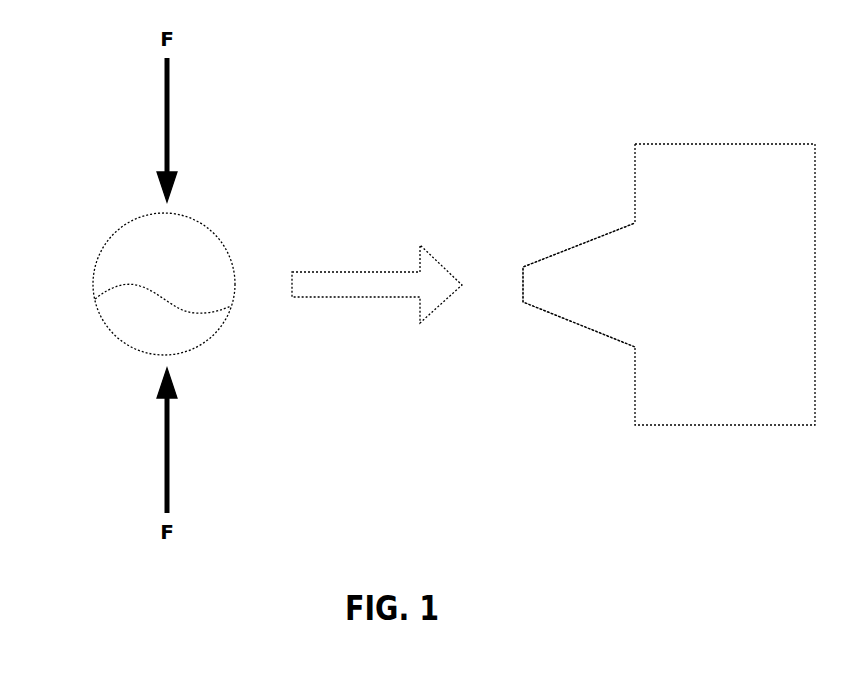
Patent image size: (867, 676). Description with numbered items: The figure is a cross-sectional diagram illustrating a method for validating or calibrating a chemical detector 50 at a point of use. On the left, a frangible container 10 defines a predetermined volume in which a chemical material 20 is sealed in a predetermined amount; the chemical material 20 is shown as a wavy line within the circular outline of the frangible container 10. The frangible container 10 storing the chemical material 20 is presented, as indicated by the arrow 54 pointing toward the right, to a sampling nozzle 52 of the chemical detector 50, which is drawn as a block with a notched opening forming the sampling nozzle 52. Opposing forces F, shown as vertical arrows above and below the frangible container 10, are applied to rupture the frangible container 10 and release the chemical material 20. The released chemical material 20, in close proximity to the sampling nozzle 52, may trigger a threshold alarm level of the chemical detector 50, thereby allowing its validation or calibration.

The frangible container 10 is at (195, 243).
The chemical material 20 is at (138, 318).
The chemical detector 50 is at (702, 142).
The sampling nozzle 52 is at (557, 317).
The arrow 54 is at (365, 267).